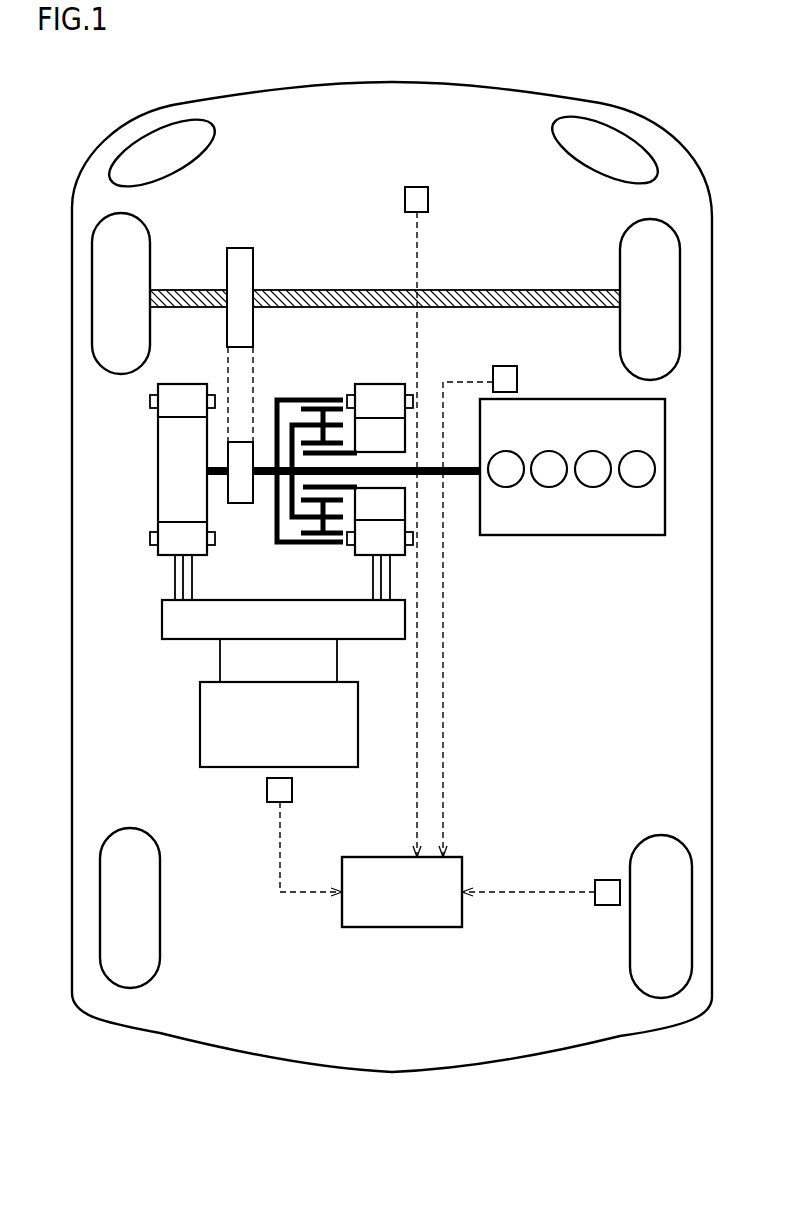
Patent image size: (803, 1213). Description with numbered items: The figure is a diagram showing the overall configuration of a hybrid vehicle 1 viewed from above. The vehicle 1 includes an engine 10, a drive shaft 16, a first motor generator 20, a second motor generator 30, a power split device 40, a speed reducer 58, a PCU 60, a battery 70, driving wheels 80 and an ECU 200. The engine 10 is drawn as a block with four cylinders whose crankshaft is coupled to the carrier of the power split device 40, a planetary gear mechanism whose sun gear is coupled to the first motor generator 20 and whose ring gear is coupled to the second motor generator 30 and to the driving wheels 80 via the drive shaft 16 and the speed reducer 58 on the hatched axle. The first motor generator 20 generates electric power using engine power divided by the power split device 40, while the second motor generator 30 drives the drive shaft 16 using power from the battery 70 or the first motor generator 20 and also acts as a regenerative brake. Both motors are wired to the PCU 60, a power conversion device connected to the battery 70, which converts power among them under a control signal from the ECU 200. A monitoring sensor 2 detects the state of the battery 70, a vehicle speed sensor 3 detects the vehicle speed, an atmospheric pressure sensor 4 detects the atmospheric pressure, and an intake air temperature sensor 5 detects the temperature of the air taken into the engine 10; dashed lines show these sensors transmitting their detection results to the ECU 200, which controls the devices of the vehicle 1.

The vehicle 1 is at (398, 50).
The driving wheel 80 is at (633, 222).
The speed reducer 58 is at (240, 248).
The drive shaft 16 is at (266, 478).
The second motor generator 30 is at (183, 384).
The first motor generator 20 is at (380, 384).
The power split device 40 is at (326, 381).
The engine 10 is at (560, 399).
The PCU 60 is at (162, 618).
The battery 70 is at (200, 727).
The atmospheric pressure sensor 4 is at (417, 187).
The intake air temperature sensor 5 is at (505, 366).
The monitoring sensor 2 is at (292, 791).
The vehicle speed sensor 3 is at (610, 880).
The ECU 200 is at (393, 928).